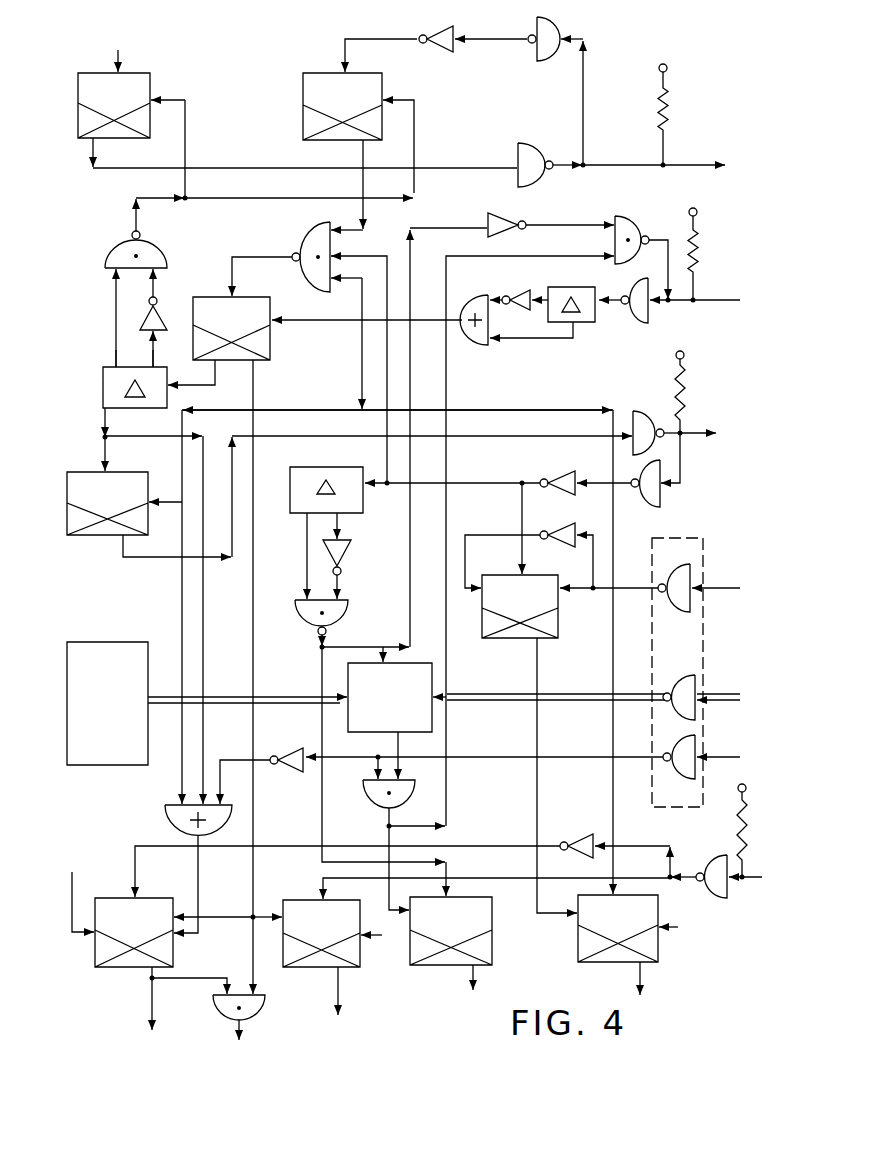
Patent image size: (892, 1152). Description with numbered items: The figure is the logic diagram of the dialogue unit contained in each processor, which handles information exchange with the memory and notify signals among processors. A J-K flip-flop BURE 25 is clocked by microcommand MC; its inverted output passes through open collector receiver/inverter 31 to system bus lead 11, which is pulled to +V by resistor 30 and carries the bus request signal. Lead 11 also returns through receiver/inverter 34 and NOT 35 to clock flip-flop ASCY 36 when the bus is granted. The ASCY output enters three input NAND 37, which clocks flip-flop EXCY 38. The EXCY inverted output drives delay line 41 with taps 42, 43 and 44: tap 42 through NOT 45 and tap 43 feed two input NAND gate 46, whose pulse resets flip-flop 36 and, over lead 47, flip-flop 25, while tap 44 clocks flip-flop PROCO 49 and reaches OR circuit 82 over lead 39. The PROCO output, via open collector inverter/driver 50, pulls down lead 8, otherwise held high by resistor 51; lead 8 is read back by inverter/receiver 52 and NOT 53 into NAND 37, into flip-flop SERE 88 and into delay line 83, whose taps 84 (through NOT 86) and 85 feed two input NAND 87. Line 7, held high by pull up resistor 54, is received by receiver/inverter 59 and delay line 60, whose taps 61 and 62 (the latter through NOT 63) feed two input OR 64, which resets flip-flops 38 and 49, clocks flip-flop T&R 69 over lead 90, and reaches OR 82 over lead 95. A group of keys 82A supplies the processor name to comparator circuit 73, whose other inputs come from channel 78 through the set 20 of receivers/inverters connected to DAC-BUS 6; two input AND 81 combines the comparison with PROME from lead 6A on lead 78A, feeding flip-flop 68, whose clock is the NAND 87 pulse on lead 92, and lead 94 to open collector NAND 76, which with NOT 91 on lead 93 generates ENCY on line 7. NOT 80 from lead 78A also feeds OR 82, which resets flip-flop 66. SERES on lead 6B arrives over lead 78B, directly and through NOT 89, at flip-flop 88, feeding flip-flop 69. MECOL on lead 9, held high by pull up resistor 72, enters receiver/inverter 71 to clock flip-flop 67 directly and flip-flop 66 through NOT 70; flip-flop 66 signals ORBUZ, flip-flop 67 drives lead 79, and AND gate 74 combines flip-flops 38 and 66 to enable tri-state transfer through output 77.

The J-K flip-flop BURE 25 is at (150, 80).
The flip-flop ASCY 36 is at (303, 80).
The NOT 35 is at (452, 30).
The receiver/inverter 34 is at (560, 24).
The open collector receiver/inverter 31 is at (535, 143).
The system bus lead 11 is at (617, 163).
The resistor 30 is at (657, 105).
The lead 47 is at (130, 203).
The two input NAND gate 46 is at (160, 250).
The NOT 45 is at (168, 318).
The output tap 43 is at (120, 365).
The output tap 42 is at (156, 365).
The delay line 41 is at (103, 380).
The output tap 44 is at (100, 427).
The three input NAND 37 is at (300, 243).
The flip-flop EXCY 38 is at (215, 297).
The lead 39 is at (205, 655).
The flip-flop PROCO 49 is at (67, 480).
The lead 90 is at (517, 410).
The lead 95 is at (182, 608).
The NOT 91 is at (505, 215).
The lead 93 is at (410, 565).
The open collector NAND 76 is at (638, 220).
The pull up resistor 54 is at (696, 248).
The line 7 is at (712, 300).
The receiver/inverter 59 is at (632, 325).
The delay line 60 is at (570, 287).
The intermediate tap 61 is at (576, 338).
The output tap 62 is at (527, 290).
The NOT 63 is at (507, 294).
The two input OR 64 is at (470, 345).
The resistor 51 is at (684, 385).
The open collector inverter/driver 50 is at (630, 411).
The system bus lead 8 is at (697, 433).
The inverter/receiver 52 is at (660, 500).
The NOT 53 is at (560, 472).
The NOT 89 is at (560, 523).
The delay line 83 is at (345, 453).
The second tap 85 is at (300, 525).
The first tap 84 is at (340, 522).
The NOT 86 is at (350, 558).
The two input NAND 87 is at (298, 615).
The comparator circuit 73 is at (383, 648).
The lead 92 is at (322, 783).
The lead 94 is at (449, 786).
The group of keys 82A is at (100, 642).
The channel 78 is at (578, 683).
The DAC-BUS 6 is at (718, 693).
The lead 78A is at (576, 746).
The lead 6A is at (712, 757).
The set of receivers/inverters 20 is at (703, 552).
The lead 6B is at (712, 588).
The lead 78B is at (585, 590).
The flip-flop SERE 88 is at (482, 640).
The NOT 80 is at (290, 748).
The two input AND 81 is at (366, 808).
The OR circuit 82 is at (165, 815).
The NOT 70 is at (580, 834).
The receiver/inverter 71 is at (710, 855).
The pull up resistor 72 is at (746, 825).
The lead 9 is at (745, 880).
The flip-flop 66 is at (115, 898).
The flip-flop 67 is at (300, 900).
The lead 79 is at (352, 991).
The flip-flop 68 is at (492, 905).
The flip-flop T&R 69 is at (658, 945).
The AND gate 74 is at (212, 1002).
The output 77 is at (242, 1030).